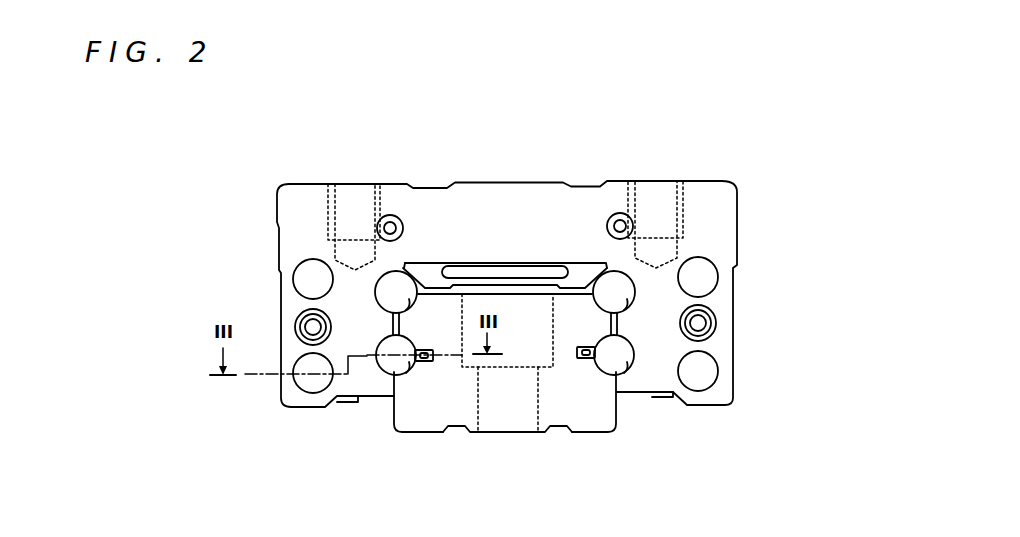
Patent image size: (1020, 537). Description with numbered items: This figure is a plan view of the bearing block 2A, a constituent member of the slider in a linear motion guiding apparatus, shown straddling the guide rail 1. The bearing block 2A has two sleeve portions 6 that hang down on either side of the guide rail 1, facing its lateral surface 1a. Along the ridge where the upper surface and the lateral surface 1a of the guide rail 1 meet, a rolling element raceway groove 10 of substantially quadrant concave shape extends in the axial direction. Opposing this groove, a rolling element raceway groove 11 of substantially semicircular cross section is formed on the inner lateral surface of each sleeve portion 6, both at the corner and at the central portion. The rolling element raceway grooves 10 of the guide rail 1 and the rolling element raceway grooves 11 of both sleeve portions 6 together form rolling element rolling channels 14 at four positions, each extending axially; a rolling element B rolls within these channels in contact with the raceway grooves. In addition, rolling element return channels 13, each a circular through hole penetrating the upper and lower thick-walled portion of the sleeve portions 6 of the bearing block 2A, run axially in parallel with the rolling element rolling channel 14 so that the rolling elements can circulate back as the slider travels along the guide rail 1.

The bearing block 2A is at (673, 160).
The guide rail 1 is at (515, 418).
The lateral surface of the guide rail 1a is at (388, 417).
The sleeve portion 6 is at (720, 343).
The rolling element raceway groove of the guide rail 10 is at (633, 300).
The rolling element raceway groove of the bearing block 11 is at (636, 291).
The rolling element return channel 13 is at (304, 290).
The rolling element rolling channel 14 is at (573, 370).
The rolling element B is at (695, 327).